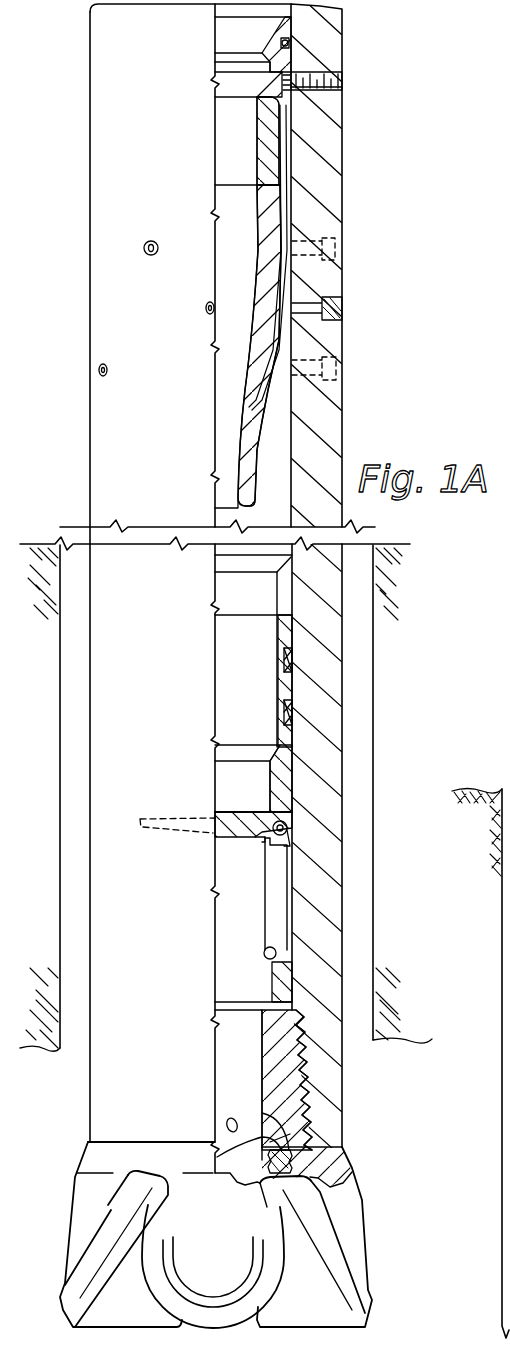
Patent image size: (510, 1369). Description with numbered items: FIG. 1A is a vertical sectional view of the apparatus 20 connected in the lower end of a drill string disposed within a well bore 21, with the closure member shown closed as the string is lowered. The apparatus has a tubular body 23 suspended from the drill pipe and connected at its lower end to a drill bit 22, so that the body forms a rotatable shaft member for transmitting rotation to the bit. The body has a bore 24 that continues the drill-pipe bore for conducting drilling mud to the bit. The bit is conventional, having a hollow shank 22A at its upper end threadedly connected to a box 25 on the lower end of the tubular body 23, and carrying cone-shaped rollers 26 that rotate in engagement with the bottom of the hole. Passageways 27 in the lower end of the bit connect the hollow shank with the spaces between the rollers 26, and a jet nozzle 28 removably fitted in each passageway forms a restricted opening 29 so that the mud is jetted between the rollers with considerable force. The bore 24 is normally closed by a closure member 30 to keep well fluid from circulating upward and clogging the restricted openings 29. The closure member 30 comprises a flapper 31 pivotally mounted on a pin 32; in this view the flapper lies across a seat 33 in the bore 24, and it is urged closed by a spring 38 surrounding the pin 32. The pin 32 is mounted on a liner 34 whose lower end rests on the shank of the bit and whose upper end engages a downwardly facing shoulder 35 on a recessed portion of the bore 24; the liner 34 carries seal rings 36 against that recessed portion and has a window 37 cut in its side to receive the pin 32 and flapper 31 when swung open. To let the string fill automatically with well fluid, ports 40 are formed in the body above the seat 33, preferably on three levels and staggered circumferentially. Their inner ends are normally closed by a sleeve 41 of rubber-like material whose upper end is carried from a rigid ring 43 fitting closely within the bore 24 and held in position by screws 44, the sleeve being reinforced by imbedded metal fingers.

The apparatus 20 is at (348, 396).
The well bore 21 is at (368, 855).
The drill bit 22 is at (367, 1195).
The hollow shank 22A is at (308, 1083).
The tubular body 23 is at (343, 212).
The bore 24 is at (277, 583).
The box 25 is at (300, 1052).
The cone-shaped rollers 26 is at (262, 1316).
The passageways 27 is at (260, 1117).
The jet nozzle 28 is at (293, 1163).
The restricted opening 29 is at (287, 1135).
The closure member 30 is at (228, 809).
The flapper 31 is at (233, 838).
The pin 32 is at (288, 826).
The seat 33 is at (273, 812).
The liner 34 is at (278, 687).
The shoulder 35 is at (277, 628).
The seal rings 36 is at (293, 662).
The window 37 is at (266, 953).
The spring 38 is at (267, 836).
The ports 40 is at (152, 241).
The sleeve 41 is at (260, 237).
The ring 43 is at (274, 108).
The screws 44 is at (343, 82).